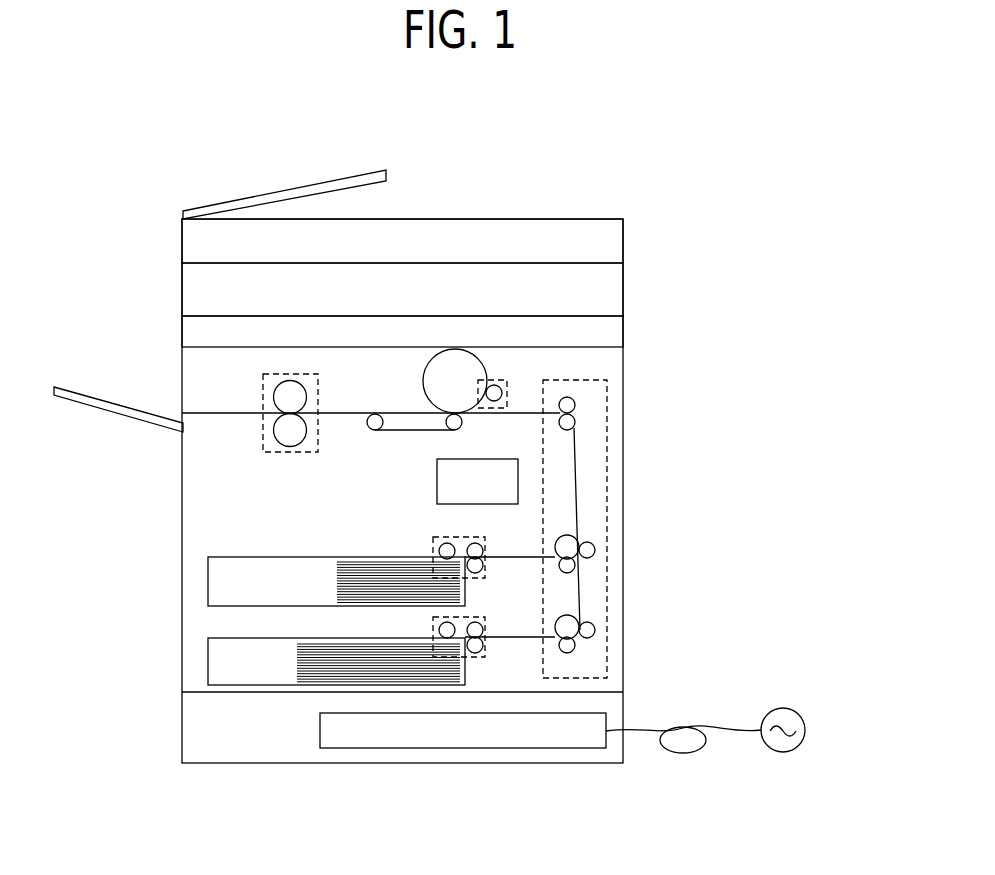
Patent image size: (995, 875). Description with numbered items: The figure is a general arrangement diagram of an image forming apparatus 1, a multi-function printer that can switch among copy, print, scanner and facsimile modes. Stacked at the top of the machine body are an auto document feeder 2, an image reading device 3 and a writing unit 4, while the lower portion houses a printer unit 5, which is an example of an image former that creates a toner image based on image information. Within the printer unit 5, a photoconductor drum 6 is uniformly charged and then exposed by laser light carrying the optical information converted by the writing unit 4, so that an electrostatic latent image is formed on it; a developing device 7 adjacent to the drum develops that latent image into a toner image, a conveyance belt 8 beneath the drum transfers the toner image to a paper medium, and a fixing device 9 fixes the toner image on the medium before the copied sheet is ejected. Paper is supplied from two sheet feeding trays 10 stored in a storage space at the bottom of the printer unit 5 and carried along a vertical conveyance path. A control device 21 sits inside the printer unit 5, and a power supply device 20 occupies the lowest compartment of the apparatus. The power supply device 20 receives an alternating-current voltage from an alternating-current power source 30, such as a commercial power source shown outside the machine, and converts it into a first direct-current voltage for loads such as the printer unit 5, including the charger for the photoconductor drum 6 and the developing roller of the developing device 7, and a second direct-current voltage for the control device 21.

The image forming apparatus 1 is at (552, 182).
The auto document feeder 2 is at (623, 243).
The image reading device 3 is at (623, 286).
The writing unit 4 is at (623, 330).
The printer unit 5 is at (623, 517).
The photoconductor drum 6 is at (423, 381).
The developing device 7 is at (500, 378).
The conveyance belt 8 is at (397, 430).
The fixing device 9 is at (290, 453).
The sheet feeding tray 10 is at (208, 578).
The power supply device 20 is at (320, 731).
The control device 21 is at (518, 481).
The alternating-current power source 30 is at (805, 730).